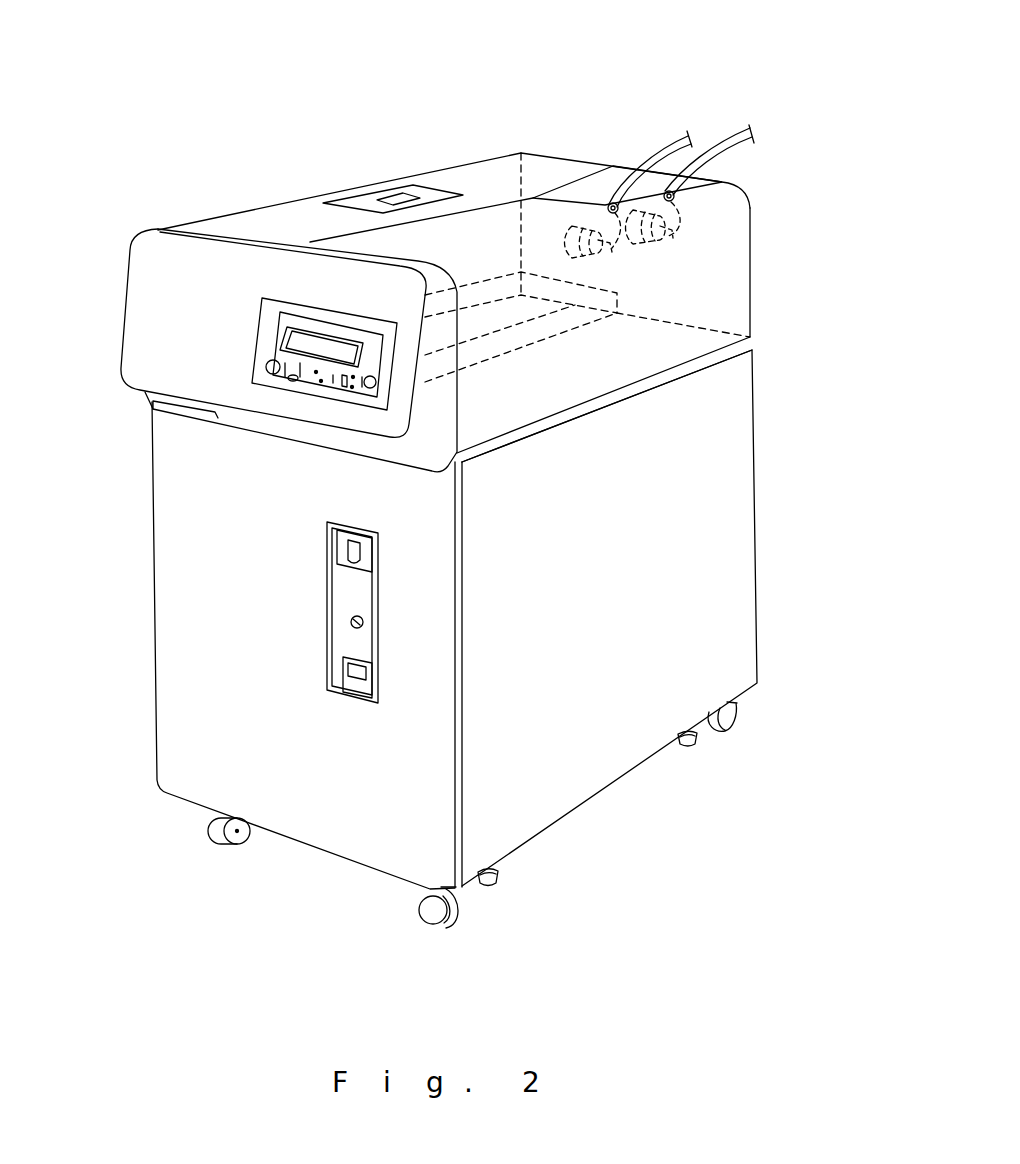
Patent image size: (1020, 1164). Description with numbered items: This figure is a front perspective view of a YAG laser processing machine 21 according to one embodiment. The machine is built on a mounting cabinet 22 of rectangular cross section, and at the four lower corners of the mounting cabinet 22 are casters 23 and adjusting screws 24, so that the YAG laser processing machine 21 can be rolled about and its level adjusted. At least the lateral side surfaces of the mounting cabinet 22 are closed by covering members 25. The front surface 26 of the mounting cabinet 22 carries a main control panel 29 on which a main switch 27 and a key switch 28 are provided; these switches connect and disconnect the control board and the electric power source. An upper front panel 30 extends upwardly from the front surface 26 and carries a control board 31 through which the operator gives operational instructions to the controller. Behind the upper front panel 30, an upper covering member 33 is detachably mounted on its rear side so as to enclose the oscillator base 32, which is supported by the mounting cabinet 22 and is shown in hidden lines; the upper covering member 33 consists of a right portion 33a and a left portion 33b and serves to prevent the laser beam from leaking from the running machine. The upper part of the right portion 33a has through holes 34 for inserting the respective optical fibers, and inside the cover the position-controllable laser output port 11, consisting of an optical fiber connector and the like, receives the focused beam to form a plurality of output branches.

The YAG laser processing machine 21 is at (358, 113).
The mounting cabinet 22 is at (766, 398).
The casters 23 is at (218, 836).
The adjusting screws 24 is at (693, 746).
The covering members 25 is at (742, 488).
The front surface 26 is at (168, 545).
The main switch 27 is at (355, 538).
The key switch 28 is at (364, 621).
The main control panel 29 is at (367, 590).
The upper front panel 30 is at (150, 310).
The control board 31 is at (377, 355).
The oscillator base 32 is at (492, 317).
The upper covering member 33 is at (484, 278).
The right portion 33a is at (741, 259).
The left portion 33b is at (497, 172).
The through holes 34 is at (612, 203).
The laser output port 11 is at (610, 257).